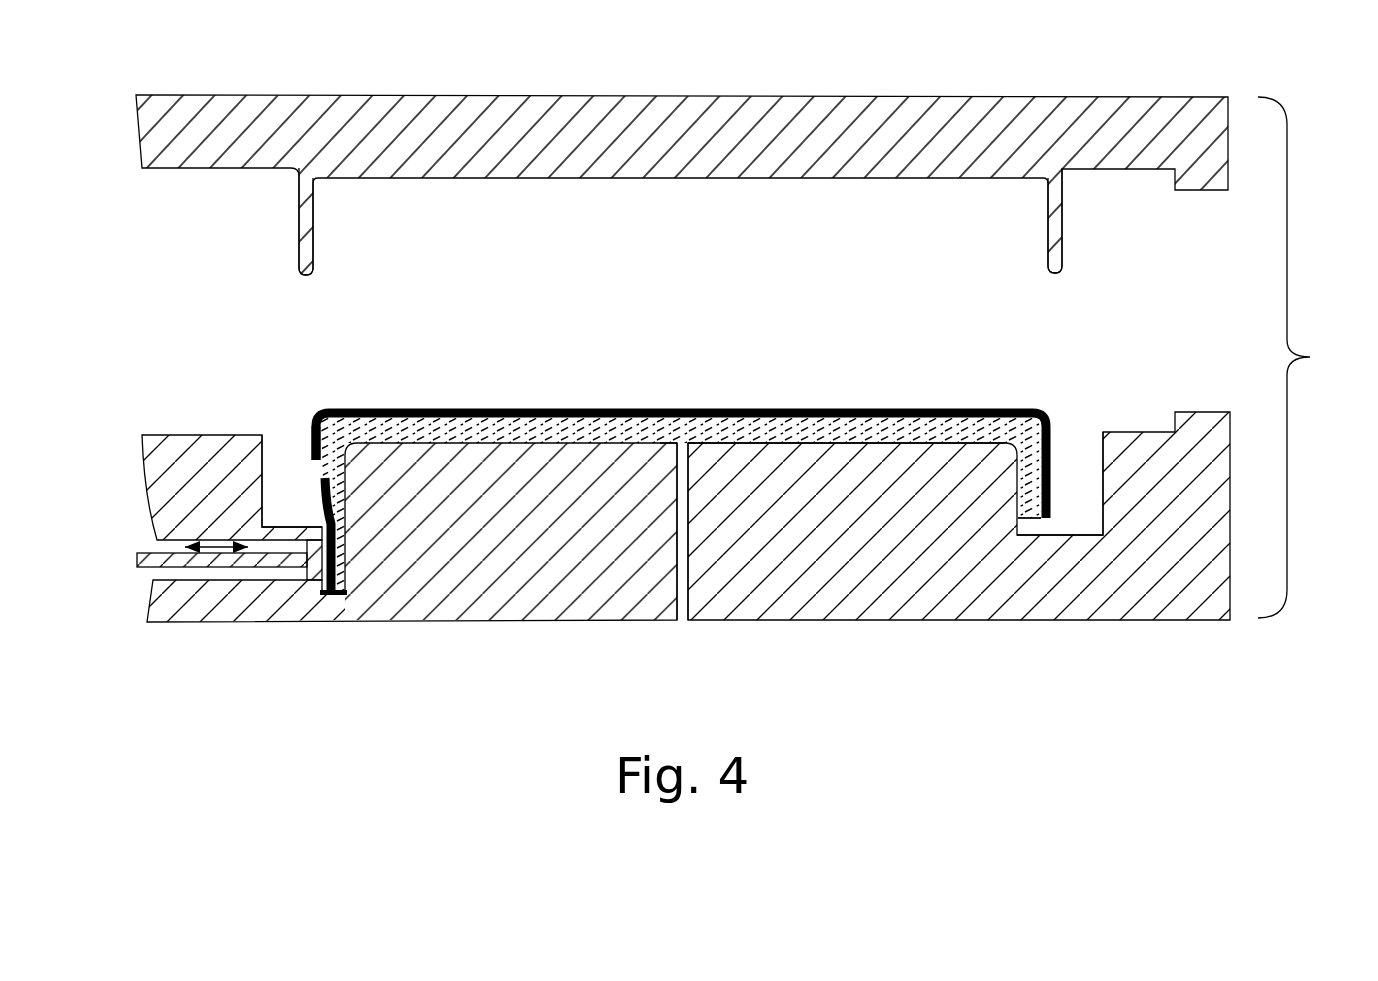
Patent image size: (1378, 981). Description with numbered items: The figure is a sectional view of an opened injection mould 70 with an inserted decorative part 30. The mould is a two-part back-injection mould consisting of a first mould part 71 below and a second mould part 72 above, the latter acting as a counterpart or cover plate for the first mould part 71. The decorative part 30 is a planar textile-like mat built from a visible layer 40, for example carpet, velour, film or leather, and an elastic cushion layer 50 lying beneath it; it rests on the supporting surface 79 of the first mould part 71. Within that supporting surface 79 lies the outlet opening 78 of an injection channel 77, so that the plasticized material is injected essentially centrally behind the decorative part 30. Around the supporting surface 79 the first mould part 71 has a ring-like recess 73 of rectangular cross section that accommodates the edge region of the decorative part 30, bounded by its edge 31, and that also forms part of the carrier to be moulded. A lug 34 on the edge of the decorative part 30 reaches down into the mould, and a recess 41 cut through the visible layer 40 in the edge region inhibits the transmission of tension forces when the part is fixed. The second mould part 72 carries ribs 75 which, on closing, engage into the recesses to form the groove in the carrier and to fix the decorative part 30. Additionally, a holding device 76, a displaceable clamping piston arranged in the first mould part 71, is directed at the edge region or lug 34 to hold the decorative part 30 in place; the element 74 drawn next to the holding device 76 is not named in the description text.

The decorative part 30 is at (681, 442).
The edge 31 is at (1039, 537).
The lug 34 is at (354, 570).
The visible layer 40 is at (537, 408).
The recess 41 is at (311, 472).
The cushion layer 50 is at (884, 427).
The injection mould 70 is at (1308, 357).
The first mould part 71 is at (221, 499).
The second mould part 72 is at (676, 146).
The recess 73 is at (288, 435).
The clamping tab 74 is at (322, 548).
The rib 75 is at (313, 223).
The holding device 76 is at (300, 570).
The injection channel 77 is at (685, 572).
The outlet opening 78 is at (688, 436).
The supporting surface 79 is at (783, 447).